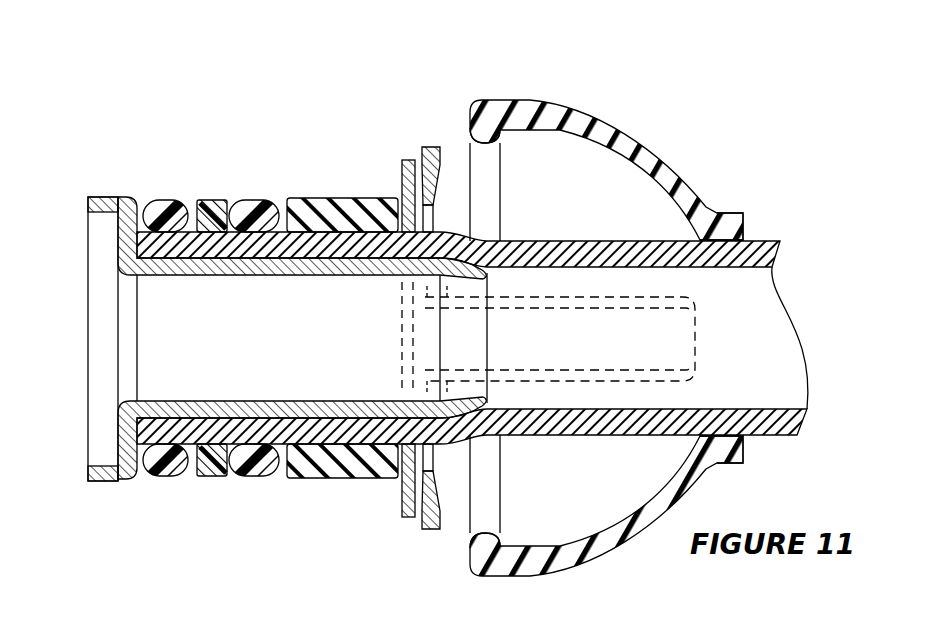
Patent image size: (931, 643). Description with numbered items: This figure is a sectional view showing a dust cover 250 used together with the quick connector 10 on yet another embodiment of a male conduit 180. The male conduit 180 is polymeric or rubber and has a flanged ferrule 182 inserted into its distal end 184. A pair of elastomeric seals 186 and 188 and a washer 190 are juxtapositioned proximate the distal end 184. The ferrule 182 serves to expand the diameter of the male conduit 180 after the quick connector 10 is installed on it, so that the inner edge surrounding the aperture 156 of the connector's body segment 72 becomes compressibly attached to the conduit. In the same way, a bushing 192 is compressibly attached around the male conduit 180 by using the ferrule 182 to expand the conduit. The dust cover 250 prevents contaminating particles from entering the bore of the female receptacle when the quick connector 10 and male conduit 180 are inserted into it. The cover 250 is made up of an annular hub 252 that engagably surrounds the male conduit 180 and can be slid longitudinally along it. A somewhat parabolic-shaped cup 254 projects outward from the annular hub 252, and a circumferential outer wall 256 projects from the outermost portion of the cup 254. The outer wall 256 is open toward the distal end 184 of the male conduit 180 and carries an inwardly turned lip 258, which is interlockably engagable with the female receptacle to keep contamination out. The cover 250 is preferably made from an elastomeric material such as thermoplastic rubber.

The quick connector 10 is at (436, 110).
The body segment 72 is at (407, 160).
The aperture 156 is at (402, 444).
The male conduit 180 is at (717, 410).
The flanged ferrule 182 is at (112, 197).
The distal end 184 is at (137, 424).
The elastomeric seal 186 is at (166, 478).
The elastomeric seal 188 is at (261, 478).
The washer 190 is at (213, 478).
The bushing 192 is at (325, 200).
The dust cover 250 is at (650, 152).
The annular hub 252 is at (733, 210).
The cup 254 is at (585, 120).
The circumferential outer wall 256 is at (522, 100).
The inwardly turned lip 258 is at (478, 533).